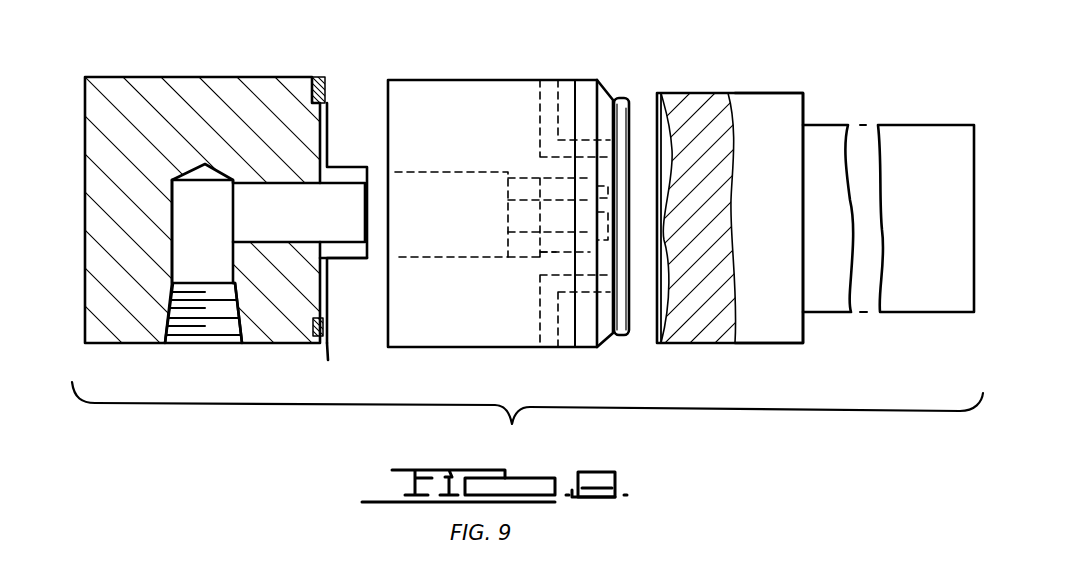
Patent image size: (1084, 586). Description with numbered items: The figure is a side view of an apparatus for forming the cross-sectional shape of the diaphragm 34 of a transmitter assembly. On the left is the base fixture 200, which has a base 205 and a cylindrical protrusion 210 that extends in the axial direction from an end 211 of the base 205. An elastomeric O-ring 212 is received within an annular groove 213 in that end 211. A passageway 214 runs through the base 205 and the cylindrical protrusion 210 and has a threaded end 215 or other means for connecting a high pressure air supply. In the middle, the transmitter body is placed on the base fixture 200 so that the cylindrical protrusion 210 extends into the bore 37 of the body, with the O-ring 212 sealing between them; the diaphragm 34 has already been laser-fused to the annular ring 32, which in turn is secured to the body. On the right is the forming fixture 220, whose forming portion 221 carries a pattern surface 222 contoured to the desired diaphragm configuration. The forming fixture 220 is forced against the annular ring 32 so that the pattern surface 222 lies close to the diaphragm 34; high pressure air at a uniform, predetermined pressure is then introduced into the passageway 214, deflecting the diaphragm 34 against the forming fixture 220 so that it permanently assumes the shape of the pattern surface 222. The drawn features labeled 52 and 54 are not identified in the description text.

The base fixture 200 is at (126, 74).
The base 205 is at (120, 320).
The cylindrical protrusion 210 is at (350, 260).
The end 211 is at (328, 128).
The elastomeric O-ring 212 is at (322, 82).
The annular groove 213 is at (326, 348).
The passageway 214 is at (208, 196).
The threaded end 215 is at (235, 313).
The forming fixture 220 is at (838, 122).
The forming portion 221 is at (763, 100).
The pattern surface 222 is at (662, 266).
The annular ring 32 is at (583, 82).
The diaphragm 34 is at (642, 118).
The bore 37 is at (446, 172).
The tube 52 is at (618, 102).
The passage 54 is at (531, 270).